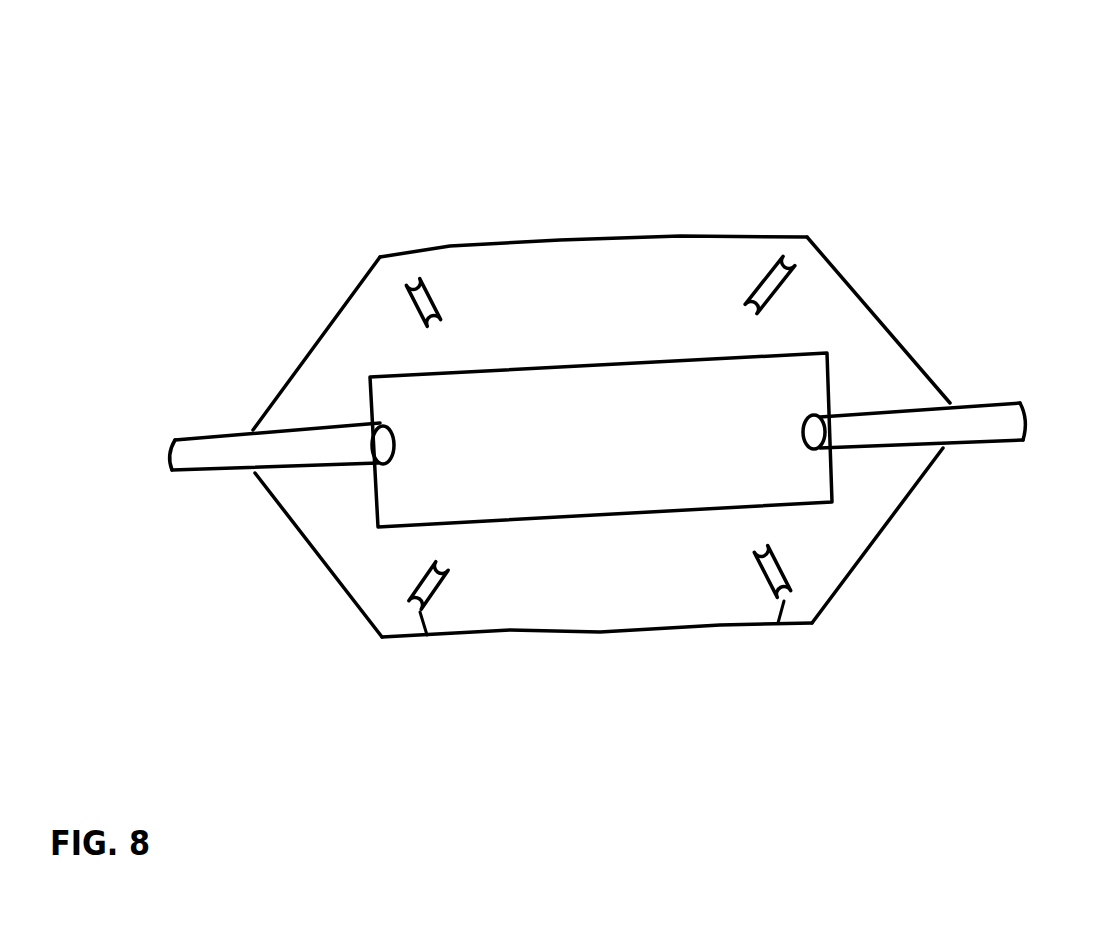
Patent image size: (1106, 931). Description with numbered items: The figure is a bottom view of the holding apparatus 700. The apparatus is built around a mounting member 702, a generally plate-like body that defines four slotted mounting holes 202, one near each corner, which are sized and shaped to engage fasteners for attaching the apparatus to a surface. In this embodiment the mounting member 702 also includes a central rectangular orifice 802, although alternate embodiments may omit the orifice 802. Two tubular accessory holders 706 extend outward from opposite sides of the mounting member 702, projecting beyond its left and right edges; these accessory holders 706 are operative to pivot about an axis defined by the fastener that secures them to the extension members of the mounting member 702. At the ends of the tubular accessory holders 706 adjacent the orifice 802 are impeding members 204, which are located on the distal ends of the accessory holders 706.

The holding apparatus 700 is at (947, 110).
The mounting member 702 is at (678, 237).
The mounting holes 202 is at (414, 275).
The orifice 802 is at (808, 373).
The accessory holders 706 is at (195, 443).
The impeding members 204 is at (378, 462).